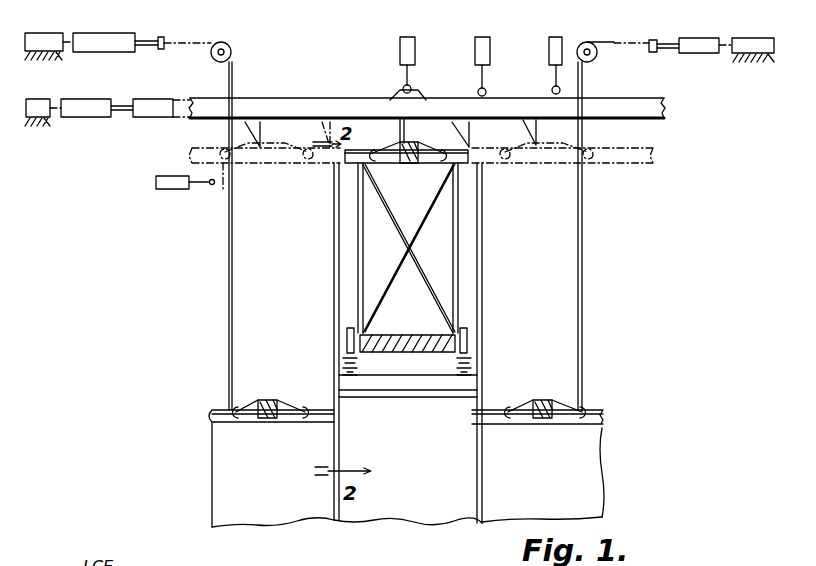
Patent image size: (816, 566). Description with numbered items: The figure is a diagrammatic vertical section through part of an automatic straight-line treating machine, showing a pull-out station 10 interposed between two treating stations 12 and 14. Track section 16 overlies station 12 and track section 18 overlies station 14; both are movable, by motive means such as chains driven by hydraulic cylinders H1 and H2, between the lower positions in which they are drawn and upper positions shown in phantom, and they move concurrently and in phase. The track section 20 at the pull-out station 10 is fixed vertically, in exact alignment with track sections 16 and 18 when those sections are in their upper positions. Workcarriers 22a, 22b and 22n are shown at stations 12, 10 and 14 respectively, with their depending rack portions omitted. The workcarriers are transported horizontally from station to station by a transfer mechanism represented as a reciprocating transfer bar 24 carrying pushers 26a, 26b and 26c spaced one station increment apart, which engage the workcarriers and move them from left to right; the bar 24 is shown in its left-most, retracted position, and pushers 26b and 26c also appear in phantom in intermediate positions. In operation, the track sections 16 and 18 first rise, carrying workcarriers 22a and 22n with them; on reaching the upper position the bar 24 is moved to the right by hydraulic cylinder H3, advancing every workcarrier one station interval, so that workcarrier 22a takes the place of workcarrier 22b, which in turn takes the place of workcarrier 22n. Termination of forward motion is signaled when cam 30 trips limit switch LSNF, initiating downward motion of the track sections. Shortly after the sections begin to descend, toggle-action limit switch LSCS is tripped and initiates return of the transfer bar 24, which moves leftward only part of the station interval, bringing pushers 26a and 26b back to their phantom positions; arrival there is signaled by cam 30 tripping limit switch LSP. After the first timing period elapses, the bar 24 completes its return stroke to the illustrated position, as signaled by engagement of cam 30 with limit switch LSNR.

The pull-out station 10 is at (432, 455).
The treating station 12 is at (285, 478).
The treating station 14 is at (563, 484).
The track section 16 is at (213, 407).
The track section 18 is at (603, 408).
The track section 20 is at (383, 212).
The workcarrier 22a is at (268, 398).
The workcarrier 22b is at (414, 165).
The workcarrier 22n is at (568, 380).
The transfer bar 24 is at (213, 105).
The pusher 26a is at (247, 130).
The pusher 26b is at (401, 140).
The pusher 26c is at (540, 122).
The cam 30 is at (425, 96).
The hydraulic cylinder H1 is at (123, 28).
The hydraulic cylinder H2 is at (697, 43).
The hydraulic cylinder H3 is at (100, 110).
The limit switch LSNR is at (434, 30).
The limit switch LSP is at (490, 40).
The limit switch LSNF is at (563, 48).
The limit switch LSCS is at (178, 160).